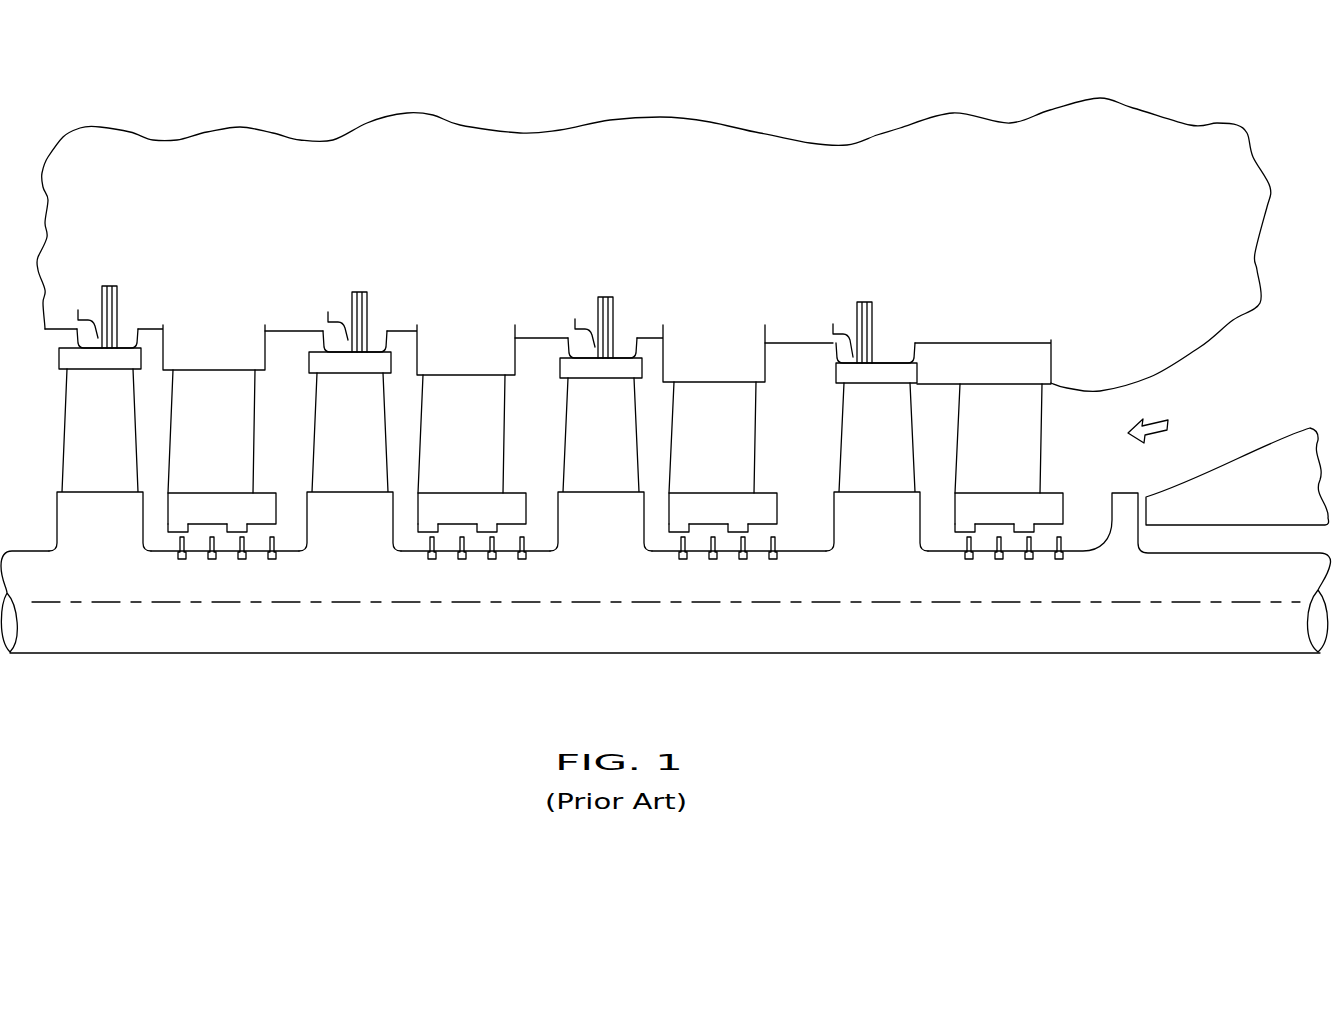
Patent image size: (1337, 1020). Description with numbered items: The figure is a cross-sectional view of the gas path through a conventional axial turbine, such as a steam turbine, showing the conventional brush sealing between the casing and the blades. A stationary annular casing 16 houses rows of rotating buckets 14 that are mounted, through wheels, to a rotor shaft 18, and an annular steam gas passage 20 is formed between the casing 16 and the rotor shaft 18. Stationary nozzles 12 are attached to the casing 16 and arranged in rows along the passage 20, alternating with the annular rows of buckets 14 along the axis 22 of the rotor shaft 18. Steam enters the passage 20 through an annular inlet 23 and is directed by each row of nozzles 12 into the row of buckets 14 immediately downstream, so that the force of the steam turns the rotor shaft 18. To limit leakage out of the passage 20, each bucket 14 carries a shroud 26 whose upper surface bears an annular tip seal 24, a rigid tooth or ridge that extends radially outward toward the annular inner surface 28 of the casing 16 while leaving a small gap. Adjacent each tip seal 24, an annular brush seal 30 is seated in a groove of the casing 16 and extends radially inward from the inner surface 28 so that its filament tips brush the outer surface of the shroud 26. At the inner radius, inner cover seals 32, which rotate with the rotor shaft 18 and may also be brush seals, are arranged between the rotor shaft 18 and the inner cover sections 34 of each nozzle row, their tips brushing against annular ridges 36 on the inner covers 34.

The stationary nozzle 12 is at (197, 445).
The rotating bucket 14 is at (84, 445).
The stationary annular casing 16 is at (515, 222).
The rotor shaft 18 is at (95, 589).
The annular steam gas passage 20 is at (270, 445).
The axis 22 is at (351, 606).
The annular inlet 23 is at (1217, 430).
The annular tip seal 24 is at (70, 336).
The shroud 26 is at (73, 358).
The annular inner surface of the casing 28 is at (153, 329).
The annular brush seal 30 is at (117, 303).
The inner cover seal 32 is at (182, 559).
The inner cover section 34 is at (220, 520).
The annular ridge 36 is at (172, 532).